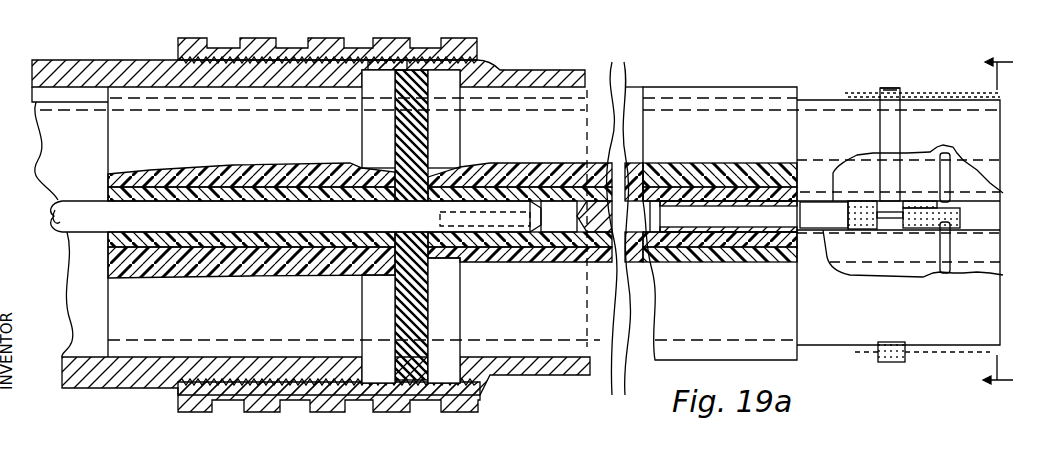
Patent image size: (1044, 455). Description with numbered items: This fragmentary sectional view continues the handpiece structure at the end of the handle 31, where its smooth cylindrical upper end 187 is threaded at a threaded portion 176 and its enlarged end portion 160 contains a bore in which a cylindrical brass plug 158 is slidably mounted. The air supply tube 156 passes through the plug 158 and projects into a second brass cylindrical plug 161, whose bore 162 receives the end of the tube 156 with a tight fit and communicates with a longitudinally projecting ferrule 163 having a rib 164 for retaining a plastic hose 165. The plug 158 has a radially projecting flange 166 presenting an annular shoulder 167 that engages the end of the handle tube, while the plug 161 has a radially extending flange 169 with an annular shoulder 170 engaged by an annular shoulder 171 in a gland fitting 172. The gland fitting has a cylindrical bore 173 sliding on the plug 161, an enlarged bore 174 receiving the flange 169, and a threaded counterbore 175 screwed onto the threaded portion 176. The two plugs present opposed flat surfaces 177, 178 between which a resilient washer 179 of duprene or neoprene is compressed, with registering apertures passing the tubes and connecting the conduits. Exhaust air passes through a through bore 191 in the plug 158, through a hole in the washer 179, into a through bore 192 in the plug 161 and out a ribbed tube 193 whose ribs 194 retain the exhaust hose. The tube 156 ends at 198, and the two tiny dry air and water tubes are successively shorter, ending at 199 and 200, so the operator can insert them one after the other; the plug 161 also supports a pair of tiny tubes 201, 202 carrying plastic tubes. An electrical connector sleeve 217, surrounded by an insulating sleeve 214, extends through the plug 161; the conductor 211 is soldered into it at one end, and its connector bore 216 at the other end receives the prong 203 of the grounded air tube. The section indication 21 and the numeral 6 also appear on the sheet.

The shaft 6 is at (36, 102).
The section line 21 is at (1005, 221).
The handle 31 is at (108, 58).
The air supply tube 156 is at (613, 97).
The cylindrical brass plug 158 is at (258, 88).
The enlarged end portion 160 is at (72, 68).
The brass cylindrical plug 161 is at (671, 86).
The bore 162 is at (690, 110).
The ferrule 163 is at (838, 100).
The rib 164 is at (875, 90).
The plastic hose 165 is at (937, 98).
The radially projecting flange 166 is at (384, 75).
The annular shoulder 167 is at (362, 133).
The radially extending flange 169 is at (478, 66).
The annular shoulder 170 is at (508, 66).
The annular shoulder 171 is at (447, 72).
The gland fitting 172 is at (545, 88).
The cylindrical bore 173 is at (593, 100).
The enlarged bore 174 is at (413, 70).
The threaded counterbore 175 is at (343, 45).
The threaded portion 176 is at (228, 45).
The flat surface 177 is at (395, 307).
The flat surface 178 is at (428, 317).
The resilient washer 179 is at (428, 278).
The smooth cylindrical upper end 187 is at (45, 60).
The through bore 191 is at (153, 340).
The through bore 192 is at (595, 344).
The ribbed tube 193 is at (872, 358).
The rib 194 is at (907, 360).
The end of tube 198 is at (600, 147).
The end of tube 199 is at (560, 167).
The end of tube 200 is at (547, 258).
The tiny tube 201 is at (950, 205).
The tiny tube 202 is at (952, 276).
The prong 203 is at (485, 207).
The electrical conductor 211 is at (798, 196).
The insulating sleeve 214 is at (507, 258).
The connector bore 216 is at (571, 216).
The electrical connector sleeve 217 is at (512, 258).